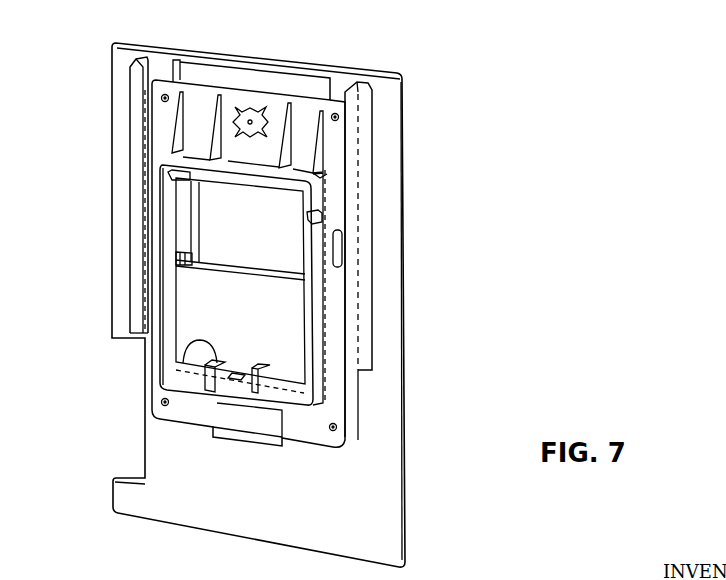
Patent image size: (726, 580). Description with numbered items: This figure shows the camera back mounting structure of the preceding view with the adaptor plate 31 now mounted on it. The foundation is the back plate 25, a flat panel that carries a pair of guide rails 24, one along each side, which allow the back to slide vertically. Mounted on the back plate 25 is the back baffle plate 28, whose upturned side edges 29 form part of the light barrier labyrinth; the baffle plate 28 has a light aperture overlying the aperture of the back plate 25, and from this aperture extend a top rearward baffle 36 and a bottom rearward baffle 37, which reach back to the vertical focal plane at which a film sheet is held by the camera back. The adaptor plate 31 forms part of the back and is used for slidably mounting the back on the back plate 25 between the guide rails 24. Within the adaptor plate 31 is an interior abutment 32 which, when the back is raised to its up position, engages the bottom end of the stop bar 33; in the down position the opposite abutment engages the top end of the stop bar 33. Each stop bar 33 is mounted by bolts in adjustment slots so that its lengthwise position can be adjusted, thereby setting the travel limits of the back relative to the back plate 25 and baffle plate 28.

The guide rail 24 is at (367, 115).
The back plate 25 is at (390, 430).
The back baffle plate 28 is at (253, 73).
The upturned side edge 29 is at (176, 60).
The adaptor plate 31 is at (167, 117).
The interior abutment 32 is at (197, 342).
The stop bar 33 is at (185, 213).
The top rearward baffle 36 is at (168, 173).
The bottom rearward baffle 37 is at (217, 267).